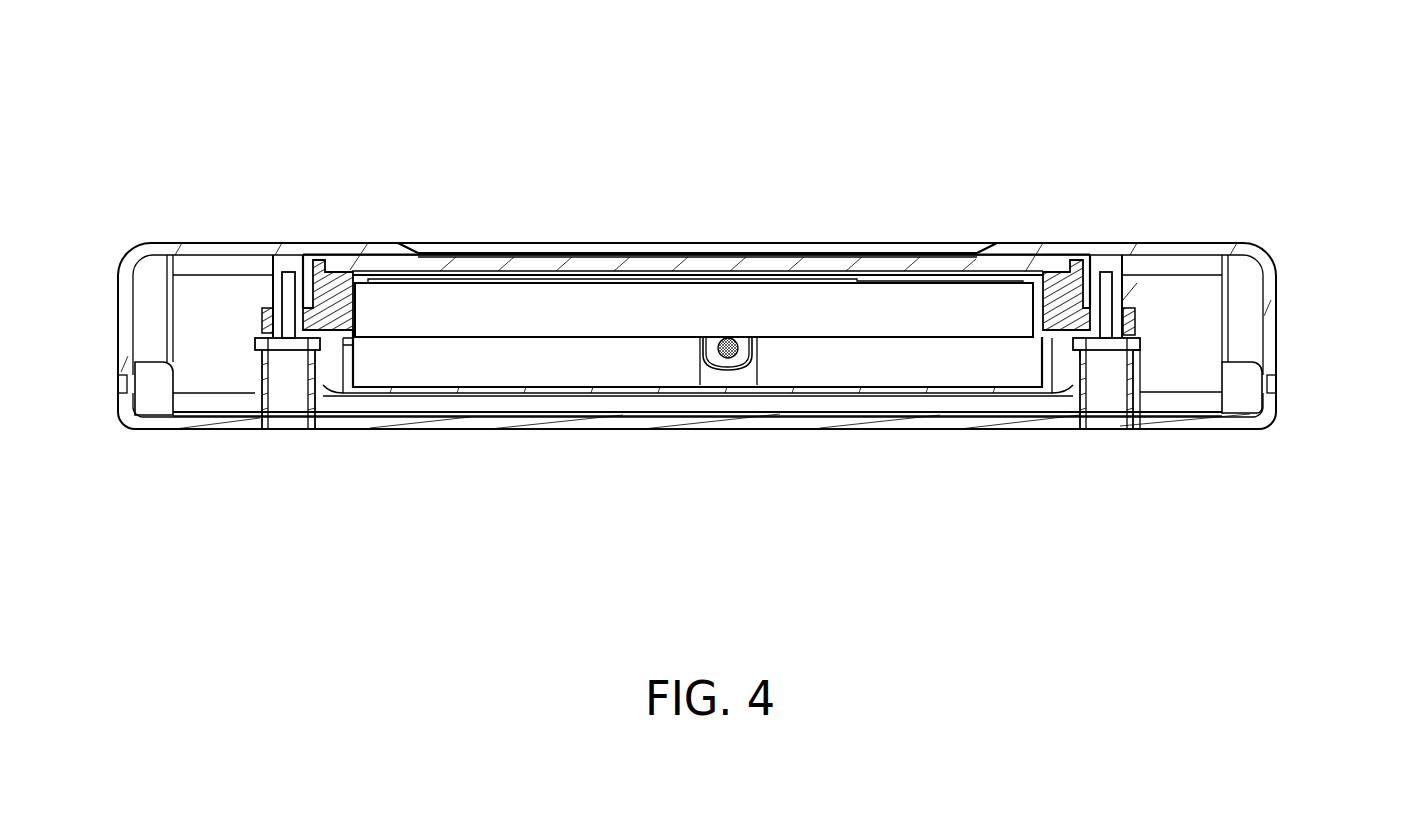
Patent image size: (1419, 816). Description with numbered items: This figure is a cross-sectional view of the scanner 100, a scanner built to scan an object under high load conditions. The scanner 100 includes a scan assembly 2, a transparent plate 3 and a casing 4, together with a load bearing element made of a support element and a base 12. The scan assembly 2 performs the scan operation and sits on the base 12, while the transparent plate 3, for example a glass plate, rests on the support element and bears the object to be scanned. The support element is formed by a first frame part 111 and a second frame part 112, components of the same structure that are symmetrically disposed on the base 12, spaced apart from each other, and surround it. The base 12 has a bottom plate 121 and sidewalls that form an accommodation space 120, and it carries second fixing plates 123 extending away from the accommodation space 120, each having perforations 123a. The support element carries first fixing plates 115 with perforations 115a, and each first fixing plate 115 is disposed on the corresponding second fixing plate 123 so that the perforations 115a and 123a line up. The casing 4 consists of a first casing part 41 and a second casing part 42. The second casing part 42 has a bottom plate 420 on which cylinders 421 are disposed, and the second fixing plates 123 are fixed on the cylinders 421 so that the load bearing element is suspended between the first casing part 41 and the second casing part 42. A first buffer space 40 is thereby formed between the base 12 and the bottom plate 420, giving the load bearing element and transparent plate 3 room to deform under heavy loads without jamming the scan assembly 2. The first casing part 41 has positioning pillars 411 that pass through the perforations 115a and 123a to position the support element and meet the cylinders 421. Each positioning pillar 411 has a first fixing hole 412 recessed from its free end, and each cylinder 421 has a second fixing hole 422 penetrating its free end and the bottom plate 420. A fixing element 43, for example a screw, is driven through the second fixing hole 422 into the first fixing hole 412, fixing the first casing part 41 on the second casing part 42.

The scanner 100 is at (1352, 64).
The scan assembly 2 is at (843, 308).
The transparent plate 3 is at (603, 263).
The casing 4 is at (1353, 272).
The first buffer space 40 is at (532, 402).
The first casing part 41 is at (1262, 273).
The second casing part 42 is at (1265, 407).
The fixing element 43 is at (1110, 340).
The base 12 is at (838, 395).
The accommodation space 120 is at (418, 355).
The bottom plate 121 is at (900, 388).
The second fixing plate 123 is at (1140, 342).
The perforation 123a is at (1132, 357).
The first frame part 111 is at (320, 270).
The second frame part 112 is at (1052, 300).
The first fixing plate 115 is at (1127, 305).
The perforation 115a is at (1125, 303).
The positioning pillar 411 is at (1132, 322).
The first fixing hole 412 is at (1105, 278).
The bottom plate 420 is at (705, 421).
The cylinder 421 is at (1077, 352).
The second fixing hole 422 is at (1118, 412).